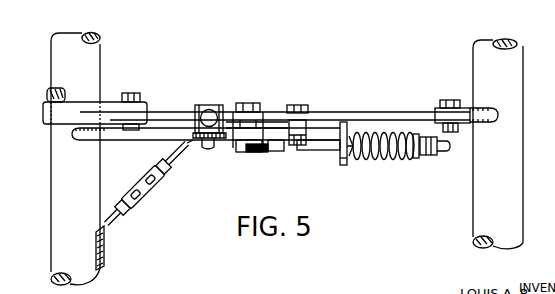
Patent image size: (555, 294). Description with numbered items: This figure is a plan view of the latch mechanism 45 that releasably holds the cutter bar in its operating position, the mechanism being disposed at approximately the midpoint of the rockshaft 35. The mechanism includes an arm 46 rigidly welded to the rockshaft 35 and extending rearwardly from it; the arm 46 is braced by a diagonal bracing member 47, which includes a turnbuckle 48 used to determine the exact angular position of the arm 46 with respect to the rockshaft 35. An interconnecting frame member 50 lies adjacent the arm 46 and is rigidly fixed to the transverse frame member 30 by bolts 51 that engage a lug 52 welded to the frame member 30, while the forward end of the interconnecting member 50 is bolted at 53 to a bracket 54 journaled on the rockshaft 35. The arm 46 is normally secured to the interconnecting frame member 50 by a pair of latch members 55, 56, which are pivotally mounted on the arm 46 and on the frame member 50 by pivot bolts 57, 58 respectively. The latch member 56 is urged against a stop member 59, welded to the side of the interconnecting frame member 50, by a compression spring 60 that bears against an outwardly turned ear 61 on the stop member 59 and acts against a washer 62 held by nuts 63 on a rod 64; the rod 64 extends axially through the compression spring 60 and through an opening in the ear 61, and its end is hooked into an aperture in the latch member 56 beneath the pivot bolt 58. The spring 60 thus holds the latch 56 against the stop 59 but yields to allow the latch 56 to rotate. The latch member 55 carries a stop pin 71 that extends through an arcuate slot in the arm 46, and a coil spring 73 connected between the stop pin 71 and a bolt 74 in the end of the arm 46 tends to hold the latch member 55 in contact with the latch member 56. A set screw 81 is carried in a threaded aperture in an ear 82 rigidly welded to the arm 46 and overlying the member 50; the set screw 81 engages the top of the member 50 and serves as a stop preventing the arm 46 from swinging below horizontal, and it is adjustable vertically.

The transverse frame member 30 is at (513, 72).
The rockshaft 35 is at (100, 43).
The latch mechanism 45 is at (297, 82).
The arm 46 is at (147, 133).
The diagonal bracing member 47 is at (116, 231).
The turnbuckle 48 is at (152, 193).
The interconnecting frame member 50 is at (368, 113).
The bolts 51 is at (450, 101).
The lug 52 is at (470, 112).
The bolt 53 is at (133, 94).
The bracket 54 is at (72, 110).
The latch member 55 is at (240, 120).
The latch member 56 is at (273, 122).
The pivot bolt 57 is at (251, 106).
The pivot bolt 58 is at (302, 108).
The stop member 59 is at (337, 122).
The compression spring 60 is at (384, 158).
The ear 61 is at (345, 161).
The washer 62 is at (418, 160).
The nuts 63 is at (430, 157).
The rod 64 is at (325, 148).
The stop pin 71 is at (238, 151).
The coil spring 73 is at (255, 154).
The bolt 74 is at (275, 151).
The set screw 81 is at (205, 112).
The ear 82 is at (215, 105).